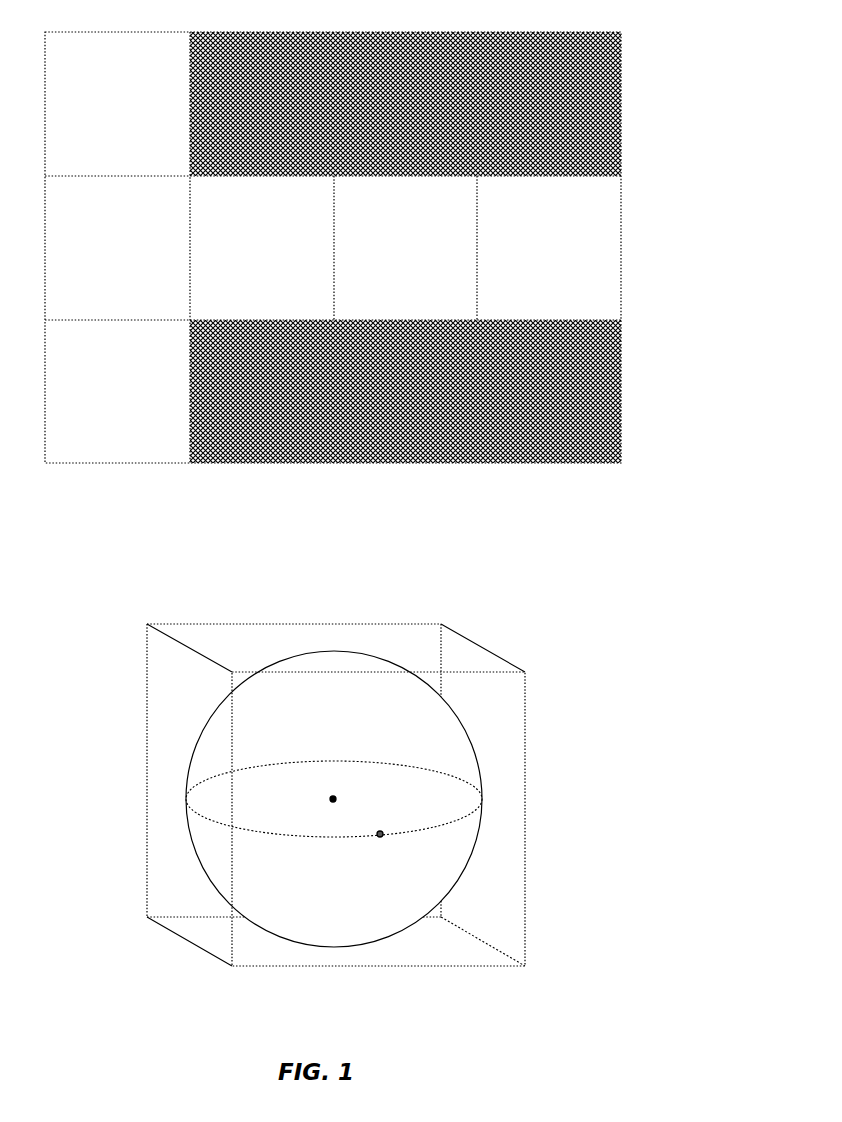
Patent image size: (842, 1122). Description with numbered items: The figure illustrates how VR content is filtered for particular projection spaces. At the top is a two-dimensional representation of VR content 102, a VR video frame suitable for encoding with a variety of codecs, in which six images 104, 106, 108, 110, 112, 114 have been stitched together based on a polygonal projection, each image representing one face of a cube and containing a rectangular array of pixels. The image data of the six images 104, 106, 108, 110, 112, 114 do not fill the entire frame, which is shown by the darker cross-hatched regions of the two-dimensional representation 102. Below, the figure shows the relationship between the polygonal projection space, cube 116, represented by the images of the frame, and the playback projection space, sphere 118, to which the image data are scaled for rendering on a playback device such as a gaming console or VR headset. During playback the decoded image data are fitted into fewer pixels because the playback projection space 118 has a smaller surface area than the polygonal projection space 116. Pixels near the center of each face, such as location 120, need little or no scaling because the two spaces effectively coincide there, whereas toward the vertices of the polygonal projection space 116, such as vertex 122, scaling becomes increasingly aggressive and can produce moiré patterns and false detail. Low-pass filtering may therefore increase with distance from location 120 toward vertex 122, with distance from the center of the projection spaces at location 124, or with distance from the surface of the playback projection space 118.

The two-dimensional representation of VR content 102 is at (657, 40).
The image 104 is at (117, 104).
The image 106 is at (117, 248).
The image 108 is at (117, 391).
The image 110 is at (262, 248).
The image 112 is at (405, 248).
The image 114 is at (549, 248).
The polygonal projection space 116 is at (139, 680).
The playback projection space 118 is at (179, 763).
The vertex 122 is at (517, 664).
The location 124 is at (325, 791).
The location 120 is at (372, 823).